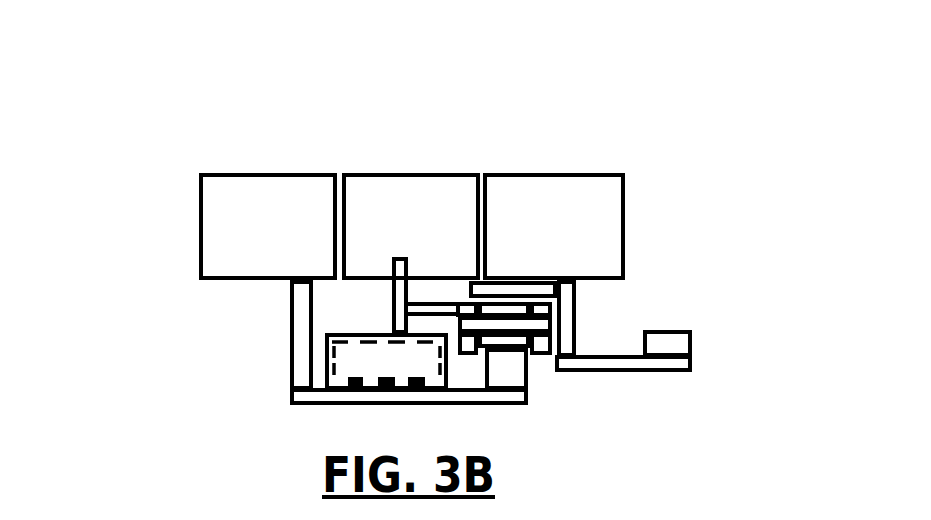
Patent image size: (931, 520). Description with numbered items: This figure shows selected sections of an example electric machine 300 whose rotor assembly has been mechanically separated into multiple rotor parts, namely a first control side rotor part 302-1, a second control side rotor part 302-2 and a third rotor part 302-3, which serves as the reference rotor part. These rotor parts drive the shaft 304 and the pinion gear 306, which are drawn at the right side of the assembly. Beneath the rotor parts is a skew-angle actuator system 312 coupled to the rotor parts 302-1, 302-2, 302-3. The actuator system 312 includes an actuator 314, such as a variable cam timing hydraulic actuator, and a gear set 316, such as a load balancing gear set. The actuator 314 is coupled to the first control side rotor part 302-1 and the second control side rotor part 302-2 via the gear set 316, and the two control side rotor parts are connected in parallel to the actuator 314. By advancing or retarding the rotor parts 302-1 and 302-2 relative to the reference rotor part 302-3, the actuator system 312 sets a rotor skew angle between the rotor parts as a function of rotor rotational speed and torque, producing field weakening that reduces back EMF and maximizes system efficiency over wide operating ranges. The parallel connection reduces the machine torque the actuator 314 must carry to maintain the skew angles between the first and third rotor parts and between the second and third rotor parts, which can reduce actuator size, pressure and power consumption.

The electric machine 300 is at (607, 75).
The first control side rotor part 302-1 is at (297, 231).
The second control side rotor part 302-2 is at (437, 228).
The third rotor part 302-3 is at (581, 244).
The shaft 304 is at (598, 352).
The pinion gear 306 is at (667, 337).
The skew-angle actuator system 312 is at (218, 324).
The actuator 314 is at (397, 373).
The gear set 316 is at (551, 397).